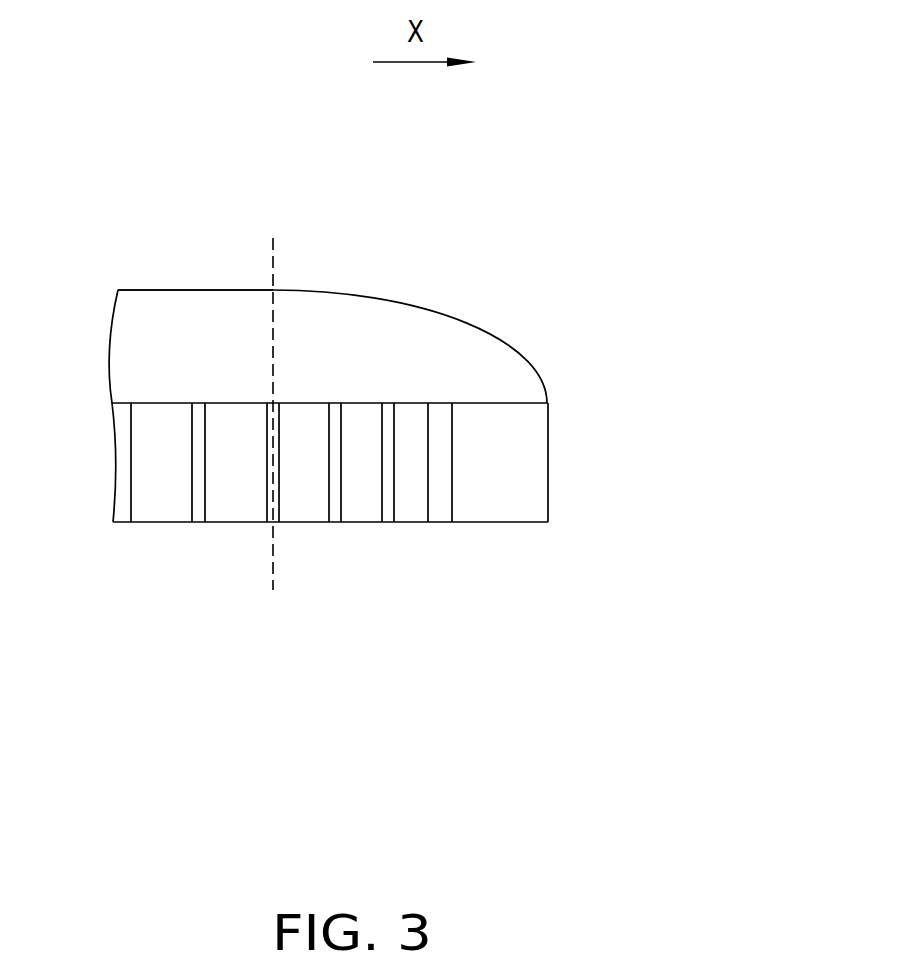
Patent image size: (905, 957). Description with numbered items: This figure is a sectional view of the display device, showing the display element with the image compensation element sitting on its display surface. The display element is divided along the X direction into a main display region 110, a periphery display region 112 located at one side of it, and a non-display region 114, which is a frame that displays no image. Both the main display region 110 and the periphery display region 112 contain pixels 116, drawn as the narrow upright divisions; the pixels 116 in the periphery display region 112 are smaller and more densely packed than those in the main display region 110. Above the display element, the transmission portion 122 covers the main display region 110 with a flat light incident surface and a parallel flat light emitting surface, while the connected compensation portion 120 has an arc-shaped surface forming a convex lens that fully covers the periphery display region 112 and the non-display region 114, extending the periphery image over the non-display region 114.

The main display region 110 is at (267, 527).
The periphery display region 112 is at (450, 527).
The non-display region 114 is at (548, 527).
The pixels 116 is at (300, 429).
The compensation portion 120 is at (447, 363).
The transmission portion 122 is at (173, 307).